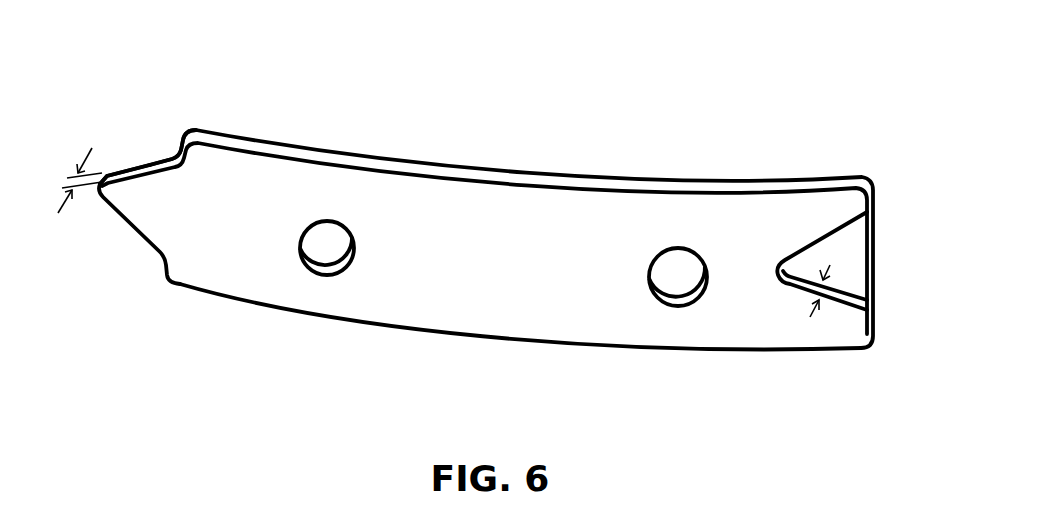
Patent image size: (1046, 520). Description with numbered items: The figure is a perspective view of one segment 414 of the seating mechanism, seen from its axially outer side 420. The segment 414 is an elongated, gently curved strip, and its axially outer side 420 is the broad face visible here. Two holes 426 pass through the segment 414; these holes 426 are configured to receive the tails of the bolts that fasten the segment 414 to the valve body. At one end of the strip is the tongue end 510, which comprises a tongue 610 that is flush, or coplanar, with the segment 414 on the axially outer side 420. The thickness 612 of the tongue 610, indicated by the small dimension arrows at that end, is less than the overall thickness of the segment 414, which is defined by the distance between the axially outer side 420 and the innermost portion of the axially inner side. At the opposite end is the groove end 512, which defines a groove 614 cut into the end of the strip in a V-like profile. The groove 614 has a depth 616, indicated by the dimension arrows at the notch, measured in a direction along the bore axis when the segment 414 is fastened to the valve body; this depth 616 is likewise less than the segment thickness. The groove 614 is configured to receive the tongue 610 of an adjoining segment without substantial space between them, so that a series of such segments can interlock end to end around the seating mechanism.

The segment 414 is at (335, 108).
The axially outer side 420 is at (595, 227).
The holes 426 is at (327, 243).
The tongue end 510 is at (132, 182).
The tongue 610 is at (165, 183).
The thickness of the tongue 612 is at (68, 182).
The groove end 512 is at (838, 258).
The groove 614 is at (855, 278).
The depth of the groove 616 is at (822, 290).